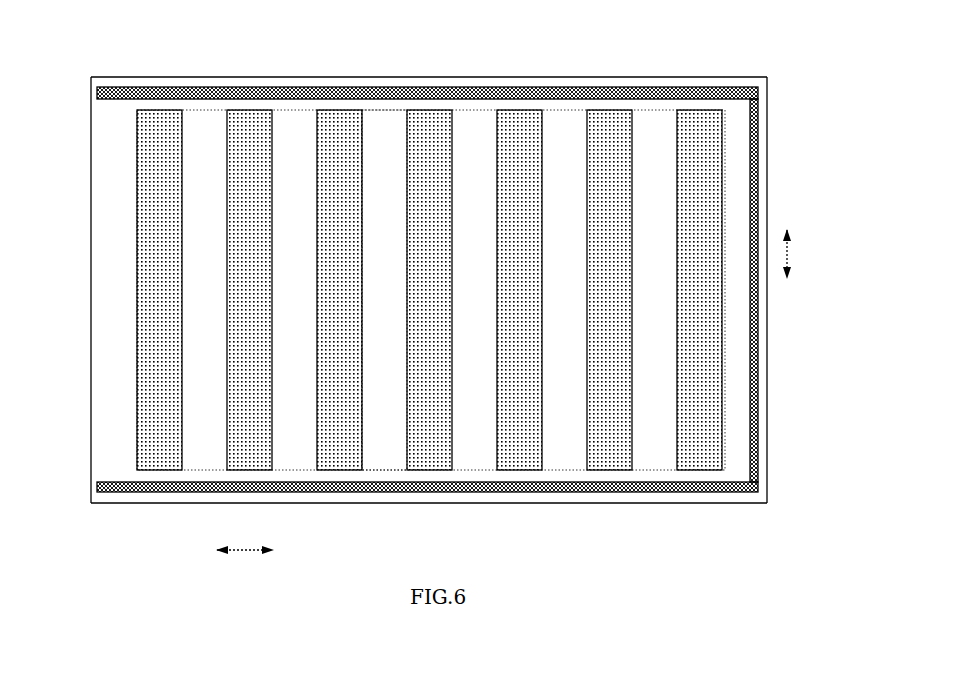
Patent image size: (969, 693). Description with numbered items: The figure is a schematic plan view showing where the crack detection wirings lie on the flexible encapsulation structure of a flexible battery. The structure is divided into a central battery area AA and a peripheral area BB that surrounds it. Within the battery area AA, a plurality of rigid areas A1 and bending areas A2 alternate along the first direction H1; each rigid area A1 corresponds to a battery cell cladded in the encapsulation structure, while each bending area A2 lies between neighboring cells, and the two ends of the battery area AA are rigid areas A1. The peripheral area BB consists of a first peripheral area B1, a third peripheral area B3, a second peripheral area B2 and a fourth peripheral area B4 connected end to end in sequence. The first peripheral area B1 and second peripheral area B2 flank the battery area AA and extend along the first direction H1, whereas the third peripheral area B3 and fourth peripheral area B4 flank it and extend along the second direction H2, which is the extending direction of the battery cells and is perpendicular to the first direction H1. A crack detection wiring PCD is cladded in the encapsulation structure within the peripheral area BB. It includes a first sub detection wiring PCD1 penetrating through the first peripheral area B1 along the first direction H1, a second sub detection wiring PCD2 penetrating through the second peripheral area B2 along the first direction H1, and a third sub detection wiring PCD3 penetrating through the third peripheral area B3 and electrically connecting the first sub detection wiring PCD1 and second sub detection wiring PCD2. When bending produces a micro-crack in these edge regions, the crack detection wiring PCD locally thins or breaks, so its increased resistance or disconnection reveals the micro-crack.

The peripheral area BB is at (207, 104).
The battery area AA is at (357, 247).
The rigid area A1 is at (338, 128).
The bending area A2 is at (388, 133).
The first peripheral area B1 is at (590, 103).
The second peripheral area B2 is at (522, 478).
The third peripheral area B3 is at (737, 413).
The fourth peripheral area B4 is at (112, 295).
The crack detection wiring PCD is at (470, 281).
The first sub detection wiring PCD1 is at (668, 87).
The second sub detection wiring PCD2 is at (632, 492).
The third sub detection wiring PCD3 is at (758, 346).
The first direction H1 is at (245, 537).
The second direction H2 is at (800, 254).